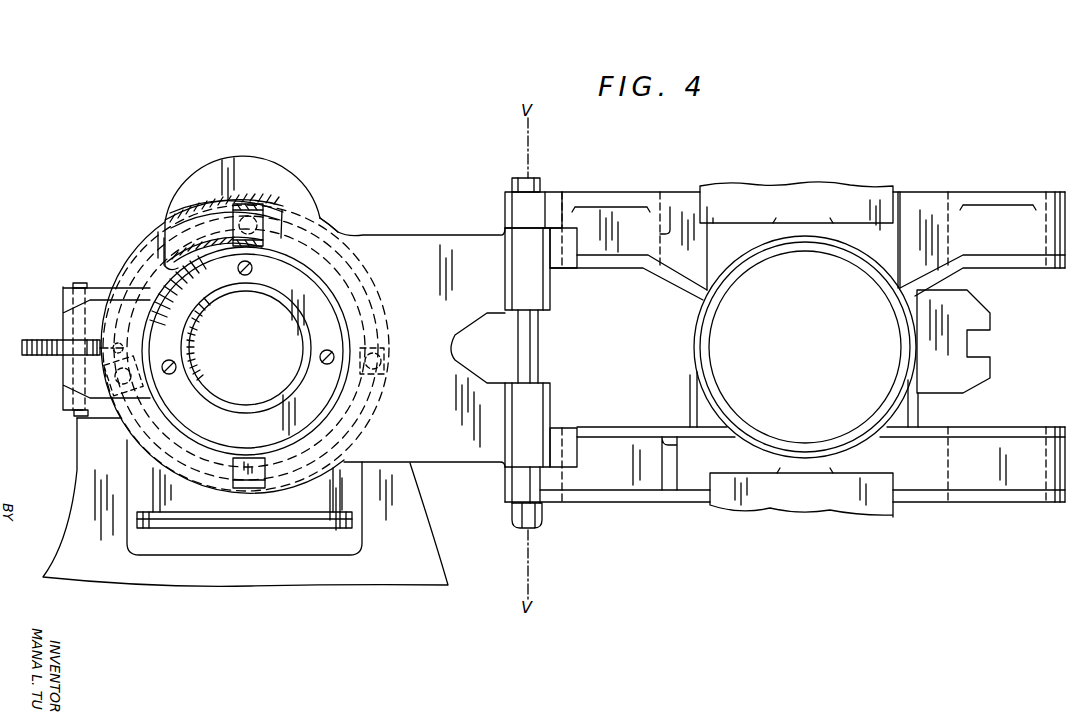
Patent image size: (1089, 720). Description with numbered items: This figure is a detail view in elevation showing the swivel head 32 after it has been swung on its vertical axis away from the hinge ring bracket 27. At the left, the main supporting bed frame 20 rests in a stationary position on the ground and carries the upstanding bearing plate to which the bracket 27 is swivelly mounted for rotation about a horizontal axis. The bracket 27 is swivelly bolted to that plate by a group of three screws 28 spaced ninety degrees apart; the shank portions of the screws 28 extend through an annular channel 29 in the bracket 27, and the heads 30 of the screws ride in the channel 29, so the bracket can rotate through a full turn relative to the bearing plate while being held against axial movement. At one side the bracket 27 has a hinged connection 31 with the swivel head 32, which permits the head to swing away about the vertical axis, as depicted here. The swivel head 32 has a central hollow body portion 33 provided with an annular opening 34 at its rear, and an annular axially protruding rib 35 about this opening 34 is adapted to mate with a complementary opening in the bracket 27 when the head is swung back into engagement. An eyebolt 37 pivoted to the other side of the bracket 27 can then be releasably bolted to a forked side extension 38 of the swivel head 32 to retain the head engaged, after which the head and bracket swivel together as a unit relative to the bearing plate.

The main supporting bed frame 20 is at (77, 472).
The hinge ring bracket 27 is at (334, 228).
The screws 28 is at (386, 364).
The annular channel 29 is at (174, 243).
The heads of the screws 30 is at (268, 214).
The hinged connection 31 is at (503, 229).
The swivel head 32 is at (915, 188).
The central hollow body portion 33 is at (692, 407).
The annular opening 34 is at (813, 255).
The annular axially protruding rib 35 is at (757, 258).
The eyebolt 37 is at (40, 342).
The forked side extension 38 is at (990, 316).